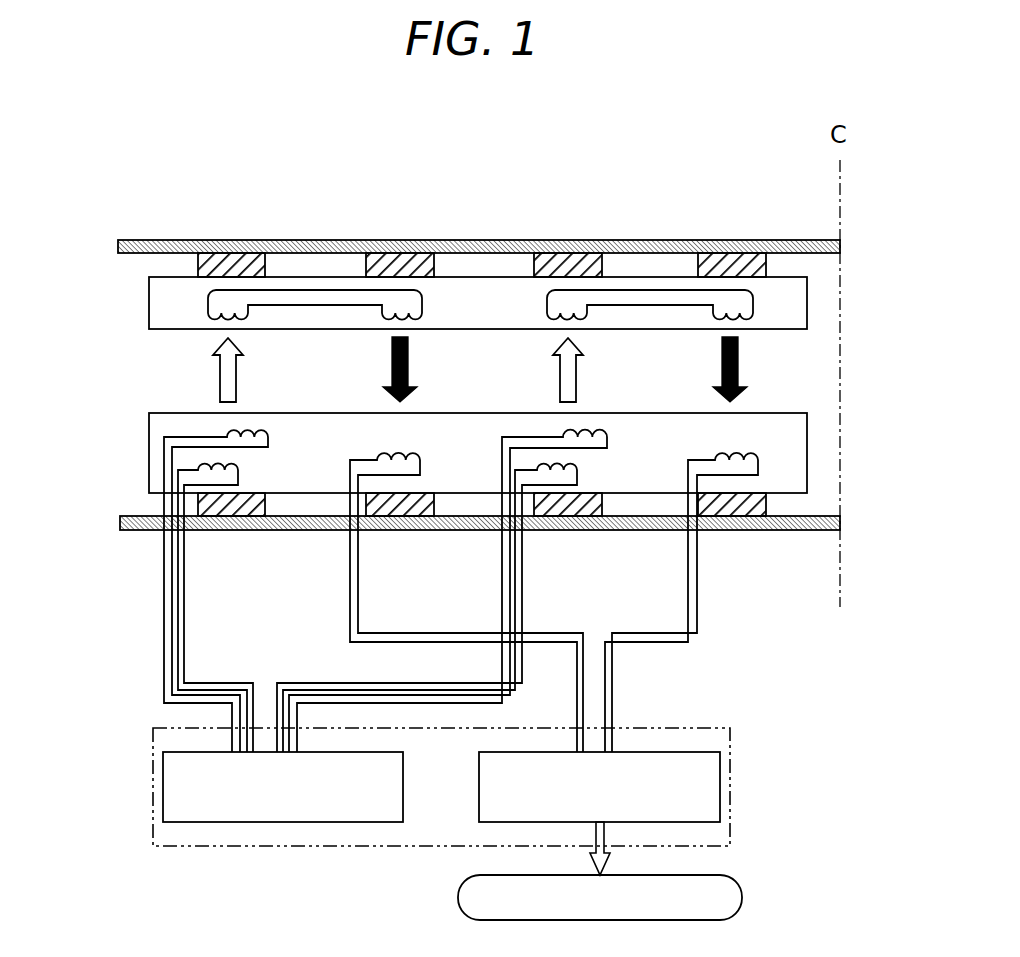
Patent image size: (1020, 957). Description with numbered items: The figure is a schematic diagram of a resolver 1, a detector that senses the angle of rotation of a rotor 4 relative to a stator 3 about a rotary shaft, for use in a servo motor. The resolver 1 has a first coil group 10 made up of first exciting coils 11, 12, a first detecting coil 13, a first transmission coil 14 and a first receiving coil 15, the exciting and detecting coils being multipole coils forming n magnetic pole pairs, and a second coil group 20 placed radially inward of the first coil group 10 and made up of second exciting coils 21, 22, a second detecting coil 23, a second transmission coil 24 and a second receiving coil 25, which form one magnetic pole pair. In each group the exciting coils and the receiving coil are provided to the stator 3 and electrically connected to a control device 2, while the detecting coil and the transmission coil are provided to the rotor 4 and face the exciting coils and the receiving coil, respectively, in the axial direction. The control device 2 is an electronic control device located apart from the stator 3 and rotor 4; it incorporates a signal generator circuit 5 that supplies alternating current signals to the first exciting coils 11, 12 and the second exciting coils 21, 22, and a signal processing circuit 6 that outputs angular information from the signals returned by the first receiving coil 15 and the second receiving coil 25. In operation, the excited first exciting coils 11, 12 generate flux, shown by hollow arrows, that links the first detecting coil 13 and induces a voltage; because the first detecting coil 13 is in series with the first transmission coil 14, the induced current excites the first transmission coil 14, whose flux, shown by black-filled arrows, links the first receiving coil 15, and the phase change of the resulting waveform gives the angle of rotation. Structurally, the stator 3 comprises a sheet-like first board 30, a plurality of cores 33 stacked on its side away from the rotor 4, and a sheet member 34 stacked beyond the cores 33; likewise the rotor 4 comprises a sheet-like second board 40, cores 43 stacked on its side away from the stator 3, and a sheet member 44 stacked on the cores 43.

The resolver 1 is at (96, 170).
The control device 2 is at (710, 727).
The stator 3 is at (100, 527).
The rotor 4 is at (100, 238).
The signal generator circuit 5 is at (163, 778).
The signal processing circuit 6 is at (479, 775).
The first coil group 10 is at (118, 291).
The first exciting coil 11 is at (226, 432).
The first exciting coil 12 is at (198, 465).
The first detecting coil 13 is at (208, 306).
The first transmission coil 14 is at (380, 316).
The first receiving coil 15 is at (377, 456).
The second coil group 20 is at (527, 291).
The second exciting coil 21 is at (562, 431).
The second exciting coil 22 is at (537, 465).
The second detecting coil 23 is at (548, 312).
The second transmission coil 24 is at (705, 309).
The second receiving coil 25 is at (715, 456).
The first board 30 is at (807, 452).
The cores 33 is at (767, 506).
The sheet member 34 is at (812, 531).
The second board 40 is at (807, 302).
The cores 43 is at (766, 266).
The sheet member 44 is at (812, 240).